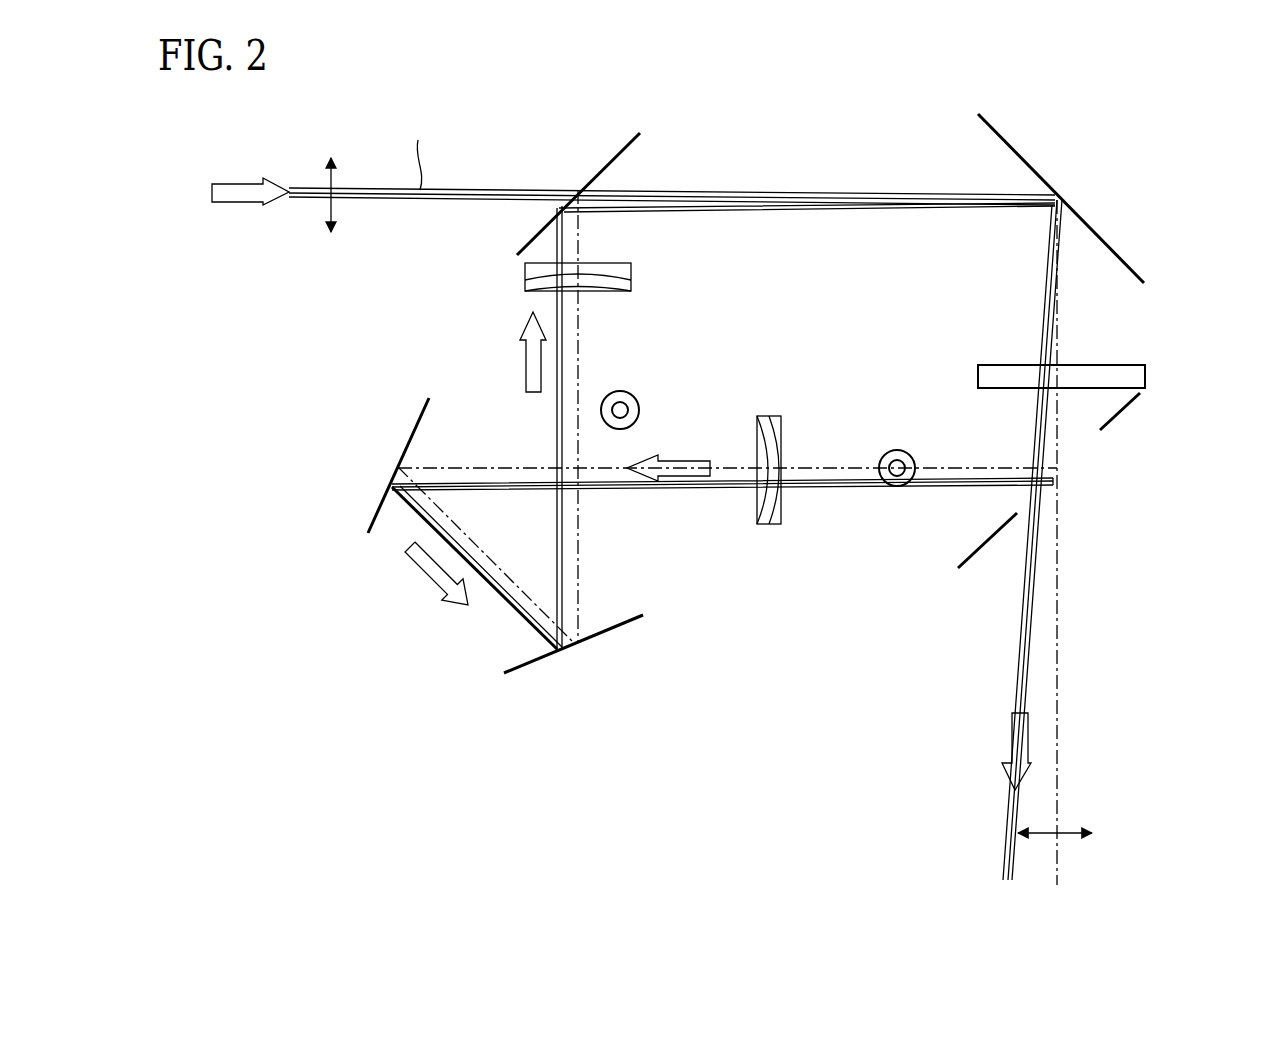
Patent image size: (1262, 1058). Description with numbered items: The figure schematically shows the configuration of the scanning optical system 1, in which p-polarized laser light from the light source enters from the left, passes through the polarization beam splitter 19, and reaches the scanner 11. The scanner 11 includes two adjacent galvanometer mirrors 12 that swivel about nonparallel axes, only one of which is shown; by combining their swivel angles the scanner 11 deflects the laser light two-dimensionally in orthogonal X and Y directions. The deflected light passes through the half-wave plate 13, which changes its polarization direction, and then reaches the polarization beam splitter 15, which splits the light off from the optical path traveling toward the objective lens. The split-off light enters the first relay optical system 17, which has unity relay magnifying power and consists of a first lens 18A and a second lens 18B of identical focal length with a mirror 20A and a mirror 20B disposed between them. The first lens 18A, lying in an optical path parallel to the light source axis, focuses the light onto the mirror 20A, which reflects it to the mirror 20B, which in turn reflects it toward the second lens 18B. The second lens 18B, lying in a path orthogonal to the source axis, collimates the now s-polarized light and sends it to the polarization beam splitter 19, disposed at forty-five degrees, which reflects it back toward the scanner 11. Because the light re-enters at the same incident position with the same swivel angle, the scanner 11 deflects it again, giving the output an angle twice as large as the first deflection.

The scanning optical system 1 is at (1210, 162).
The scanner 11 is at (1046, 168).
The galvanometer mirror 12 is at (1125, 262).
The half-wave plate 13 is at (1148, 378).
The polarization beam splitter 15 is at (1120, 420).
The first relay optical system 17 is at (381, 642).
The first lens 18A is at (766, 527).
The second lens 18B is at (525, 272).
The polarization beam splitter 19 is at (615, 158).
The mirror 20A is at (420, 407).
The mirror 20B is at (622, 628).